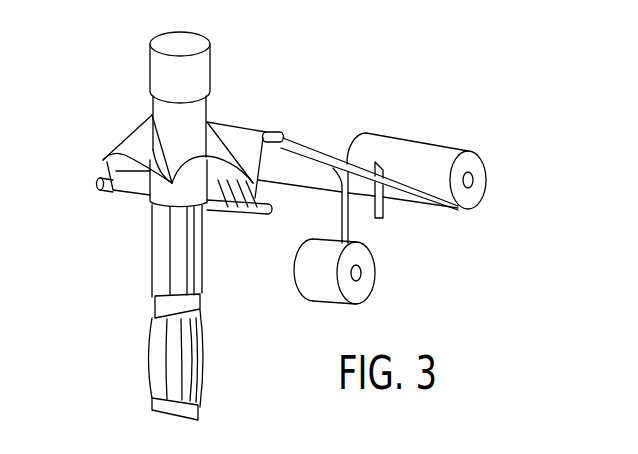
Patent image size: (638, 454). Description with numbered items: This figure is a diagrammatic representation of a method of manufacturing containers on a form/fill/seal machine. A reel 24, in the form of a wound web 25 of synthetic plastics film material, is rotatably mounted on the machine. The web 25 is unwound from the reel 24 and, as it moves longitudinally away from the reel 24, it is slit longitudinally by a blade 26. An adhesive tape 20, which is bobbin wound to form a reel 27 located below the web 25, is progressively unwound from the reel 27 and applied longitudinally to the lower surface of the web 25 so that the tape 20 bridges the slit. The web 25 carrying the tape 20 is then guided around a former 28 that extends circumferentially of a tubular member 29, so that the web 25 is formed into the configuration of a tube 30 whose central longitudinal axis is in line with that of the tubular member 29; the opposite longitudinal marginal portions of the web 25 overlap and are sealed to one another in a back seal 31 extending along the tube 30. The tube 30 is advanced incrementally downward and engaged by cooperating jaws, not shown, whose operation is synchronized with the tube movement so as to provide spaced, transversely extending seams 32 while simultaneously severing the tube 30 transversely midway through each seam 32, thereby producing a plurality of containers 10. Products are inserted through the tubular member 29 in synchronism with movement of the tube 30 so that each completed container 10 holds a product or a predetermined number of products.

The container 10 is at (136, 351).
The adhesive tape 20 is at (342, 220).
The reel 24 is at (488, 172).
The web 25 is at (313, 148).
The blade 26 is at (386, 207).
The reel 27 is at (327, 301).
The former 28 is at (135, 127).
The tubular member 29 is at (210, 74).
The tube 30 is at (153, 232).
The back seal 31 is at (170, 251).
The seam 32 is at (193, 313).